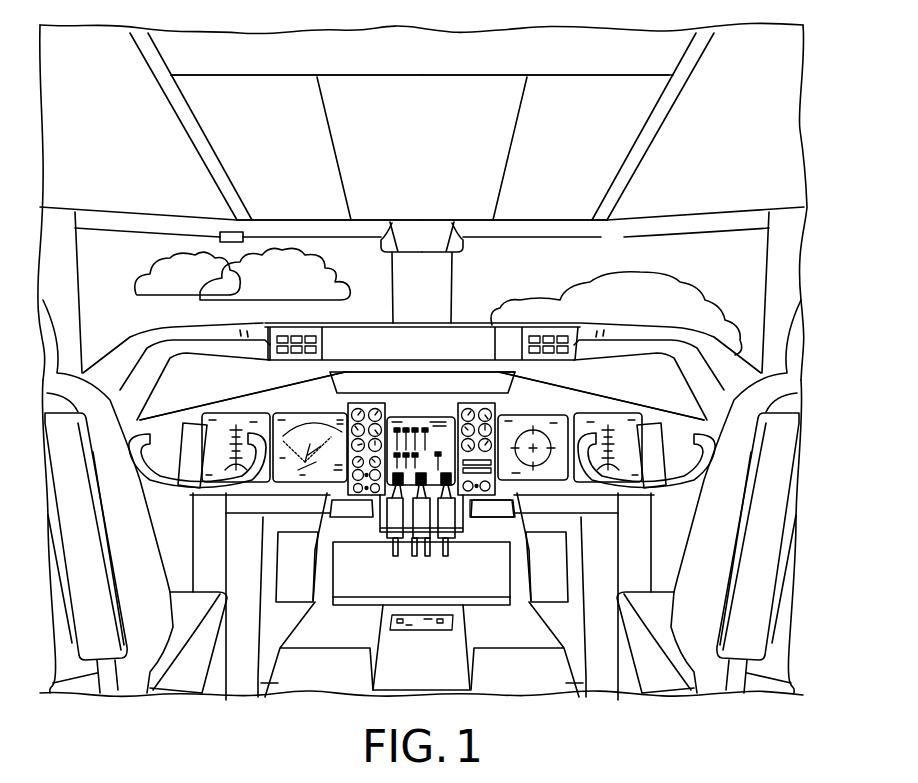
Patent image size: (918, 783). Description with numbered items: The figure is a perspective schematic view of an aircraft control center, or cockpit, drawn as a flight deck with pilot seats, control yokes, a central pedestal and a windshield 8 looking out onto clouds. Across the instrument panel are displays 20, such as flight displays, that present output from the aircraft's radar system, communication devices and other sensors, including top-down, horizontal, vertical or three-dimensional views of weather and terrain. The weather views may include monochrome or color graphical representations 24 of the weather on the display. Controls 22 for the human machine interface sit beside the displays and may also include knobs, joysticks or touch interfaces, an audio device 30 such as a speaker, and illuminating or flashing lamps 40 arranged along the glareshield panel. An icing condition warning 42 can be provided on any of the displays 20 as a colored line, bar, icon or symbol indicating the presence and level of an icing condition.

The windshield 8 is at (190, 246).
The displays 20 is at (230, 415).
The controls 22 is at (365, 405).
The graphical representations 24 is at (290, 470).
The audio device 30 is at (497, 508).
The illuminating or flashing lamps 40 is at (533, 337).
The icing condition warning 42 is at (303, 416).